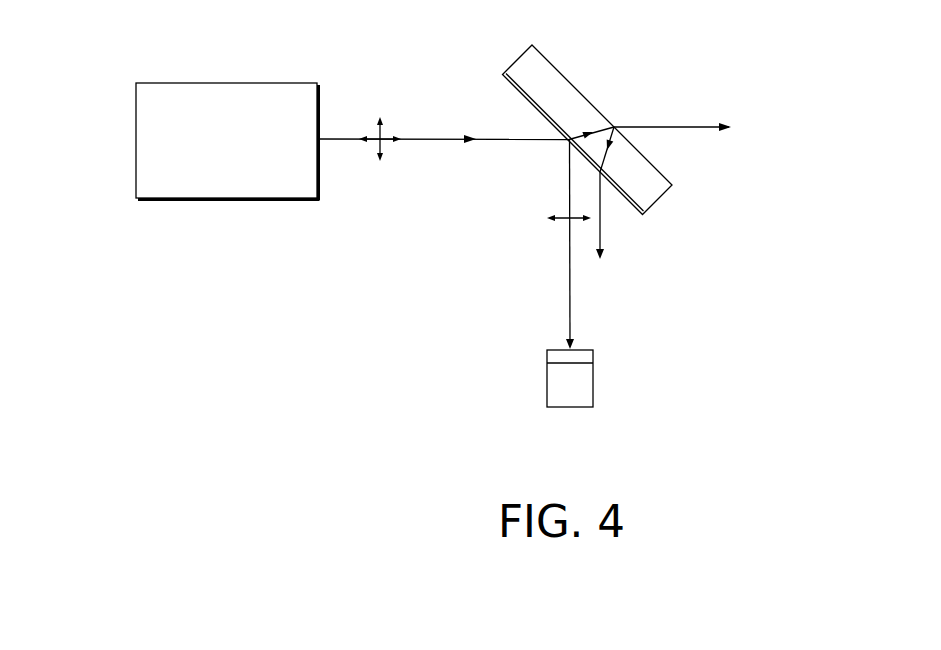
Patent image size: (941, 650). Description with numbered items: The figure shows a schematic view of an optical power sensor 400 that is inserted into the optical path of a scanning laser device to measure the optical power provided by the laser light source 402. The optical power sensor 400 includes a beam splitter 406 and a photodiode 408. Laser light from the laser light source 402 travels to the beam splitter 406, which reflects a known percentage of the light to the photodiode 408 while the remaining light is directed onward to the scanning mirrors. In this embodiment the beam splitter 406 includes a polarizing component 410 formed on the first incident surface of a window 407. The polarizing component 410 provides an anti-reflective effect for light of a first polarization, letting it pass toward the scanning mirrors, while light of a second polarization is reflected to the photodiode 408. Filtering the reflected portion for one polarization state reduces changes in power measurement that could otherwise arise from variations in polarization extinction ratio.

The optical power sensor 400 is at (438, 315).
The laser light source 402 is at (168, 199).
The beam splitter 406 is at (480, 48).
The window 407 is at (553, 65).
The photodiode 408 is at (547, 386).
The polarizing component 410 is at (634, 219).